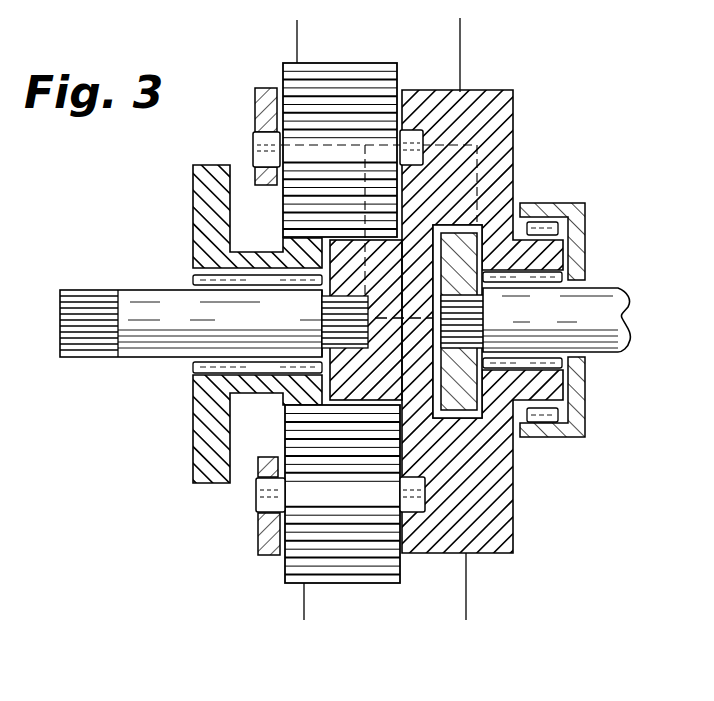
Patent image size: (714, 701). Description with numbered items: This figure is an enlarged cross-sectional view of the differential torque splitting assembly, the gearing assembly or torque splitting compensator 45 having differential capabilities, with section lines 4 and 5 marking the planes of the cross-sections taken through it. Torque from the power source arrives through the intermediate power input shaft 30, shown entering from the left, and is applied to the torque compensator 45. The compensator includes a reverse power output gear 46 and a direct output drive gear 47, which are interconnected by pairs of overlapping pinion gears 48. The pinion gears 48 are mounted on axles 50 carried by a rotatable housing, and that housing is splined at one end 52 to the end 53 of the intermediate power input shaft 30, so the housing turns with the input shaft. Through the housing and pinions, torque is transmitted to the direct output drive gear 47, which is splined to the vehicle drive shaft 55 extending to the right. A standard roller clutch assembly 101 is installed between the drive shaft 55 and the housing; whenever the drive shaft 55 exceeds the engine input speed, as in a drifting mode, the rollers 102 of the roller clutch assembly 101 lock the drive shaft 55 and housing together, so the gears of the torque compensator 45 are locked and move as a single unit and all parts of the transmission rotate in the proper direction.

The section line 4- 4 is at (297, 30).
The section line 5- 5 is at (472, 28).
The intermediate power input shaft 30 is at (133, 300).
The torque splitting compensator 45 is at (170, 487).
The reverse power output gear 46 is at (202, 182).
The direct output drive gear 47 is at (467, 405).
The pinion gears 48 is at (345, 70).
The axles 50 is at (253, 148).
The end of rotatable housing 52 is at (333, 345).
The end of intermediate power input shaft 53 is at (325, 312).
The vehicle drive shaft 55 is at (607, 296).
The roller clutch assembly 101 is at (591, 216).
The rollers 102 is at (540, 414).